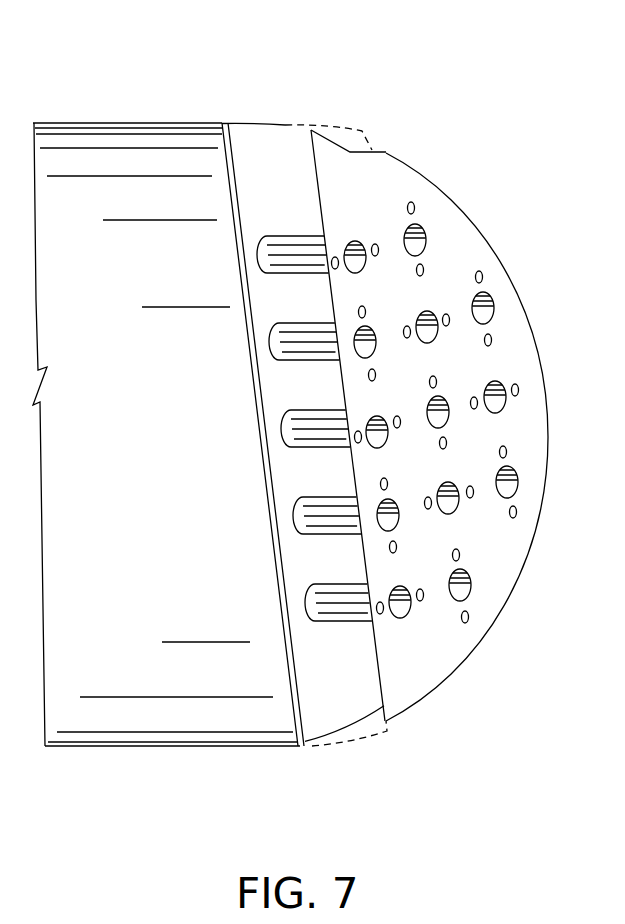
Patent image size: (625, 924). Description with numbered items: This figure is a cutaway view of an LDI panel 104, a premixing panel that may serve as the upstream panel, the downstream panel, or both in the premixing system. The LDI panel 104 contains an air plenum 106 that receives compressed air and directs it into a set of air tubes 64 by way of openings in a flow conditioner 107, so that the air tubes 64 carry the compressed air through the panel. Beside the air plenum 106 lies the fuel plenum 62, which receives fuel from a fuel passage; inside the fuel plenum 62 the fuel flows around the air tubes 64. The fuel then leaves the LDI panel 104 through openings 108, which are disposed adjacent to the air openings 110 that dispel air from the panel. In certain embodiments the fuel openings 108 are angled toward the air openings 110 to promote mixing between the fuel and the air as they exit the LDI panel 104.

The LDI panel 104 is at (262, 52).
The air plenum 106 is at (197, 707).
The flow conditioner 107 is at (245, 162).
The fuel plenum 62 is at (338, 698).
The air tubes 64 is at (296, 530).
The openings 108 is at (492, 335).
The air openings 110 is at (423, 318).